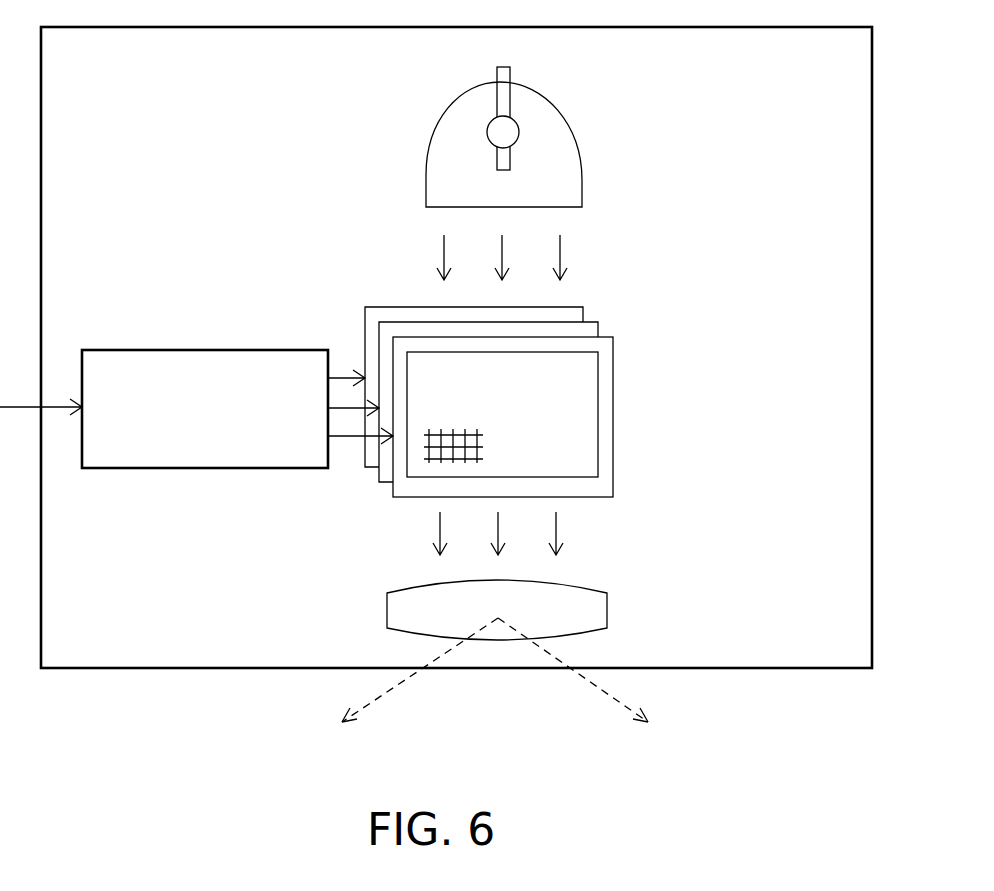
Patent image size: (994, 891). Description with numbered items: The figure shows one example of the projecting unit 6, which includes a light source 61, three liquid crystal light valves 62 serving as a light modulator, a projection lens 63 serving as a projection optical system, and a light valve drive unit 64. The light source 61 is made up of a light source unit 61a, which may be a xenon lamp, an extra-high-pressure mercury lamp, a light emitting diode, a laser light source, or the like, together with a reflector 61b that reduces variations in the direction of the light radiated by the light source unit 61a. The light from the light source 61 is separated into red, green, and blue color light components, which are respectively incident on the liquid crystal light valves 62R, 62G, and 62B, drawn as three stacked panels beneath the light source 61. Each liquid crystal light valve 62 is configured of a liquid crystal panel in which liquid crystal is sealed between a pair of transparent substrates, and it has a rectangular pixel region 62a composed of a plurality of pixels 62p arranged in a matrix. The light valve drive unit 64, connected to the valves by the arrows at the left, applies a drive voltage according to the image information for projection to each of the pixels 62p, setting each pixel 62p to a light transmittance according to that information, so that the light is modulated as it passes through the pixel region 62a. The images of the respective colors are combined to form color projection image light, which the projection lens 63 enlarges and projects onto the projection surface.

The projecting unit 6 is at (250, 27).
The light source 61 is at (468, 136).
The light source unit 61a is at (487, 131).
The reflector 61b is at (573, 140).
The liquid crystal light valve 62 is at (573, 412).
The liquid crystal light valve for blue 62B is at (572, 316).
The liquid crystal light valve for green 62G is at (583, 330).
The liquid crystal light valve for red 62R is at (605, 388).
The pixel region 62a is at (575, 444).
The pixel 62p is at (430, 447).
The projection lens 63 is at (405, 612).
The light valve drive unit 64 is at (252, 350).